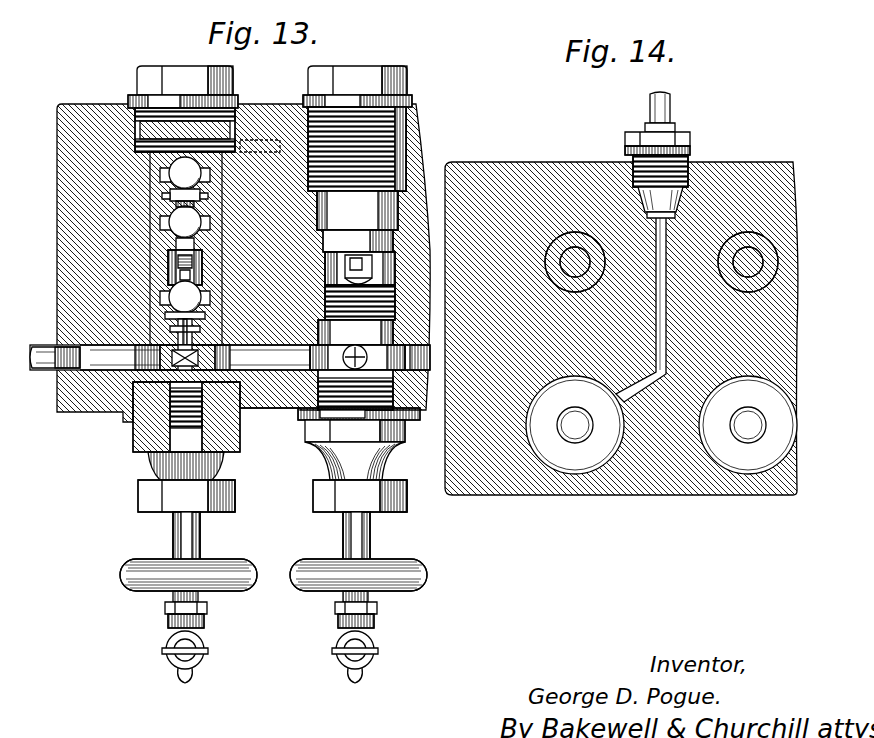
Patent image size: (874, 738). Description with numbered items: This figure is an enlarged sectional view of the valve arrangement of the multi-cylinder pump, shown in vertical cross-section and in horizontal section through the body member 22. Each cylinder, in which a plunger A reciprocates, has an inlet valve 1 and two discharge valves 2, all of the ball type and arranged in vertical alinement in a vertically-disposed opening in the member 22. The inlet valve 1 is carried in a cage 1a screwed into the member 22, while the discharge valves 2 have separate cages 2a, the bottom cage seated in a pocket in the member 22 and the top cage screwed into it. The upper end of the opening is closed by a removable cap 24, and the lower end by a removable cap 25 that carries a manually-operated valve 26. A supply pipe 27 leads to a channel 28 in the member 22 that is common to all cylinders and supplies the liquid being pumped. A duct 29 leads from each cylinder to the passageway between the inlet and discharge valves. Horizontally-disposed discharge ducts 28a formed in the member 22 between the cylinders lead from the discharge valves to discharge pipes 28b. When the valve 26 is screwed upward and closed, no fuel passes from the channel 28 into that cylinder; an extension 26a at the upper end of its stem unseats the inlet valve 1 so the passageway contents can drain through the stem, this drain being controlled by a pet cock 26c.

In FIG. 13, the member 22 is at (68, 108).
In FIG. 14, the member 22 is at (495, 170).
In FIG. 13, the removable cap 24 is at (137, 78).
In FIG. 13, the discharge duct 28a is at (273, 131).
In FIG. 14, the discharge duct 28a is at (647, 388).
In FIG. 14, the discharge pipe 28b is at (672, 106).
In FIG. 13, the discharge valve 2 is at (170, 171).
In FIG. 14, the discharge valve 2 is at (573, 432).
In FIG. 13, the cage 2a is at (150, 205).
In FIG. 13, the duct 29 is at (168, 264).
In FIG. 13, the inlet valve 1 is at (168, 297).
In FIG. 13, the cage 1a is at (152, 318).
In FIG. 13, the supply pipe 27 is at (42, 366).
In FIG. 13, the channel 28 is at (115, 372).
In FIG. 13, the removable cap 25 is at (150, 438).
In FIG. 13, the manually-operated valve 26 is at (200, 541).
In FIG. 13, the extension 26a is at (252, 410).
In FIG. 13, the pet cock 26c is at (186, 683).
In FIG. 14, the plunger A is at (566, 256).